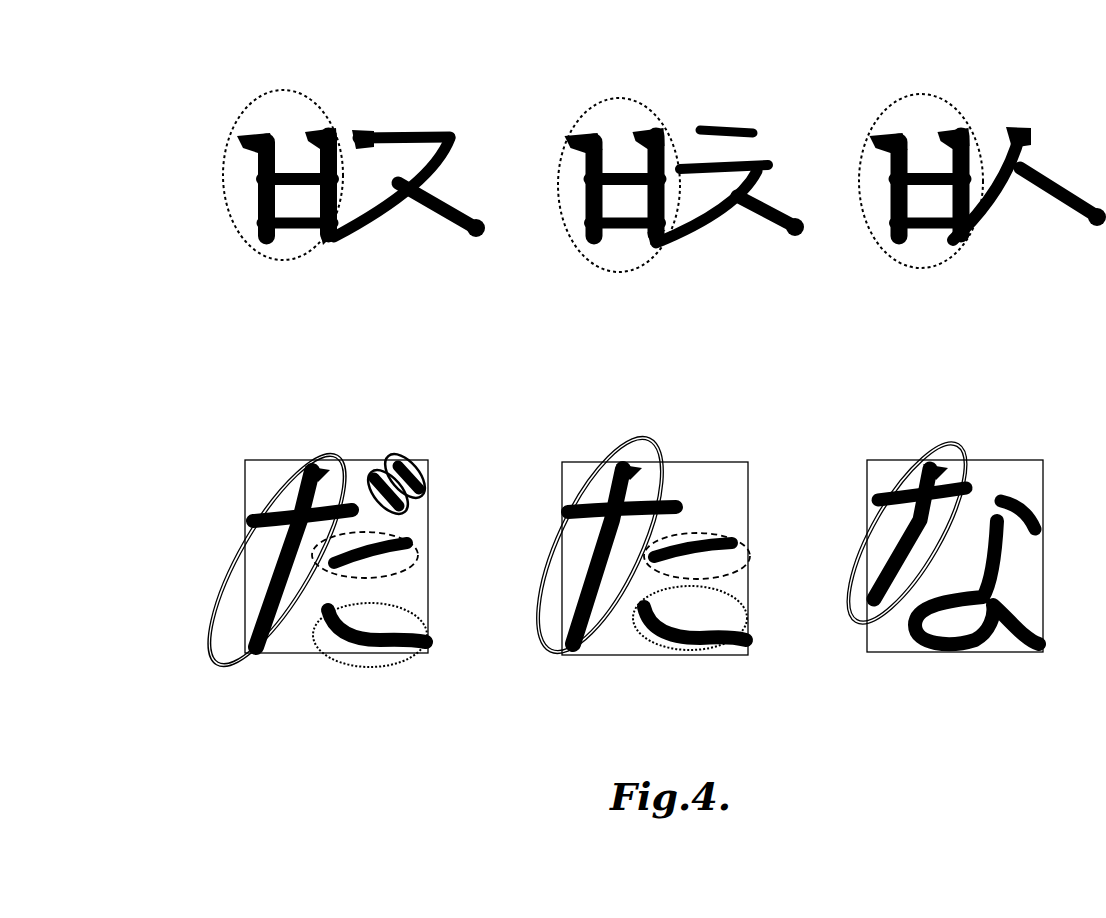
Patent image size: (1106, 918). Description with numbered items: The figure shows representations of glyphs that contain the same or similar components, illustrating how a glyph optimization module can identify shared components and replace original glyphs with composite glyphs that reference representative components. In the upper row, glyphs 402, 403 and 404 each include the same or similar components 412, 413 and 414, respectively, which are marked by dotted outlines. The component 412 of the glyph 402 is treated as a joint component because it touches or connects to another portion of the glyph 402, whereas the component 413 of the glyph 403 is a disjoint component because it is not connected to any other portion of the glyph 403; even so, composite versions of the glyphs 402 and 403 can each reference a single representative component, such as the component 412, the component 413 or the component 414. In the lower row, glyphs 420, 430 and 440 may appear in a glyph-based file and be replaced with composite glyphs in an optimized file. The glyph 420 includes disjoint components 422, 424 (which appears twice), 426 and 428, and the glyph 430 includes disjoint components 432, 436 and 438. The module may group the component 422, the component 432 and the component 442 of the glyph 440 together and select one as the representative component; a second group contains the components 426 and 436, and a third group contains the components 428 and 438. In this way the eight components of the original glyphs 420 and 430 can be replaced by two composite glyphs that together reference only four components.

The glyph 402 is at (338, 70).
The glyph 403 is at (668, 83).
The glyph 404 is at (971, 73).
The component 412 is at (288, 266).
The component 413 is at (631, 276).
The component 414 is at (933, 272).
The glyph 420 is at (428, 553).
The disjoint component 422 is at (228, 545).
The disjoint component 424 is at (392, 455).
The disjoint component 426 is at (404, 542).
The disjoint component 428 is at (400, 657).
The glyph 430 is at (750, 522).
The disjoint component 432 is at (614, 445).
The disjoint component 436 is at (716, 532).
The disjoint component 438 is at (641, 636).
The glyph 440 is at (1045, 497).
The component 442 is at (930, 442).